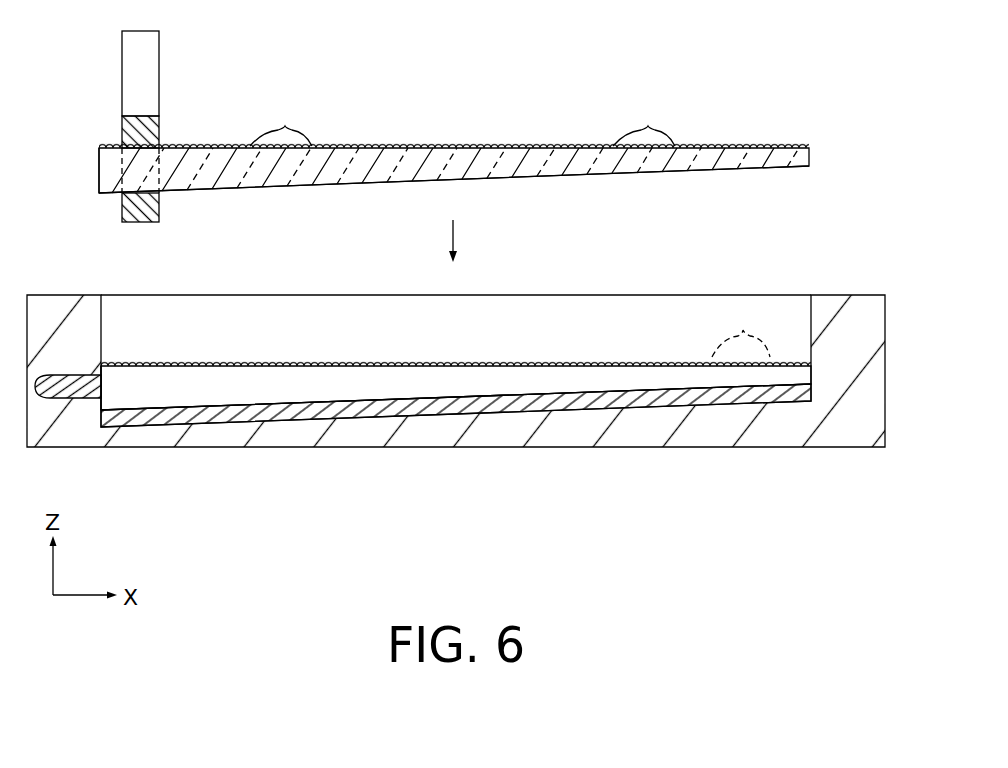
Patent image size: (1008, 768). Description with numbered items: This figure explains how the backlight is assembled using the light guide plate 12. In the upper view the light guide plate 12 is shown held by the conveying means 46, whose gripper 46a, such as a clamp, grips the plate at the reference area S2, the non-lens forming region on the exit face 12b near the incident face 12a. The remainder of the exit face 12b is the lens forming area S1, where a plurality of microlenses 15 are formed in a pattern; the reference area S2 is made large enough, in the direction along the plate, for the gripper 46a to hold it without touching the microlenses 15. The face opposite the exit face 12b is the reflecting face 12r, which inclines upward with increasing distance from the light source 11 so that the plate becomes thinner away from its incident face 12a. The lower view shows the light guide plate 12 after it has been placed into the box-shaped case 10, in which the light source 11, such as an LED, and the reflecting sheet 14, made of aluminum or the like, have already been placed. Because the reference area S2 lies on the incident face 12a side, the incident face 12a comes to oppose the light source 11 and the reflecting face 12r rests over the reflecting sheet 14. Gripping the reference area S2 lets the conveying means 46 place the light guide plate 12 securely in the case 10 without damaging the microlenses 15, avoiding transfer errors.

The case 10 is at (645, 448).
The light source 11 is at (82, 372).
The light guide plate 12 is at (812, 158).
The incident face 12a is at (99, 167).
The exit face 12b is at (148, 145).
The reflecting face 12r is at (226, 194).
The reflecting sheet 14 is at (805, 402).
The microlens 15 is at (510, 228).
The conveying means 46 is at (121, 55).
The gripper 46a is at (121, 128).
The lens forming area S1 is at (418, 129).
The reference area S2 is at (205, 91).